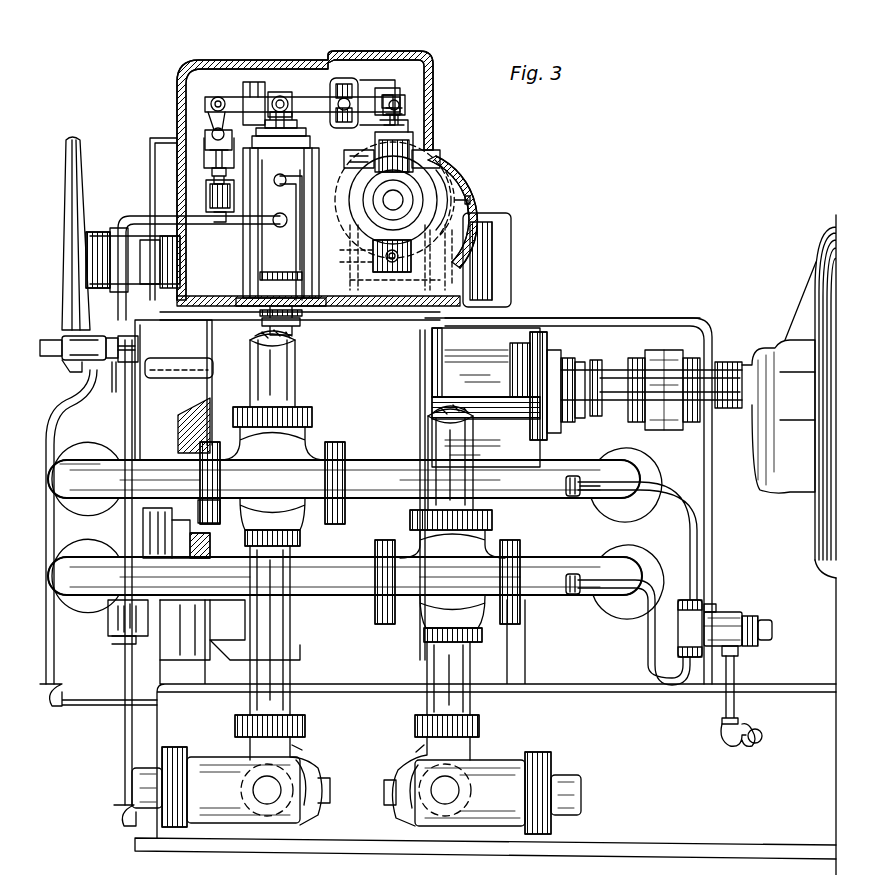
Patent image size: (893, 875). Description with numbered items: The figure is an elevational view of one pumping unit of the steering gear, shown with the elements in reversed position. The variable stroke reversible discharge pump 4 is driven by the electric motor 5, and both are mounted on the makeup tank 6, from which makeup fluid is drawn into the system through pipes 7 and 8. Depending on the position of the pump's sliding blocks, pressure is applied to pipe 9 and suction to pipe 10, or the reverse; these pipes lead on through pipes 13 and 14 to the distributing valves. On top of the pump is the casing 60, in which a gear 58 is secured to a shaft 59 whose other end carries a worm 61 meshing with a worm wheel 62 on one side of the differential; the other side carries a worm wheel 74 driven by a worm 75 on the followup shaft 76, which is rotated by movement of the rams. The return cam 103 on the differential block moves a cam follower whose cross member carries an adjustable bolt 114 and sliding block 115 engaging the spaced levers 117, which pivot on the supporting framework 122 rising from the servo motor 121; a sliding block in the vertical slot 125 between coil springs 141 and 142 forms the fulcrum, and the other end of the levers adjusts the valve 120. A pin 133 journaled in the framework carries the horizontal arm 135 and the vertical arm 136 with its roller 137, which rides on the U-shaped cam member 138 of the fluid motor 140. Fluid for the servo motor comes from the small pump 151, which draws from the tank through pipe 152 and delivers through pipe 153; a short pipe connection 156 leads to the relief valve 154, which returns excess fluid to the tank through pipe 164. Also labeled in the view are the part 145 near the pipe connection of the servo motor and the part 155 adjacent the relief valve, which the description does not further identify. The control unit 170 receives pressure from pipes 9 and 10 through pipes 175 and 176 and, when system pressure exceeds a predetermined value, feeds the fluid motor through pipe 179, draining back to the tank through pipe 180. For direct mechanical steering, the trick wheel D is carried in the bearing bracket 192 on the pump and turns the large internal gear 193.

The variable stroke reversible discharge pump 4 is at (536, 489).
The electric motor 5 is at (815, 272).
The makeup tank 6 is at (485, 804).
The pipe 7 is at (470, 702).
The pipe 8 is at (290, 698).
The pipe 9 is at (356, 581).
The pipe 10 is at (355, 483).
The pipe 13 is at (476, 485).
The pipe 14 is at (295, 398).
The gear 58 is at (496, 230).
The shaft 59 is at (368, 275).
The casing 60 is at (440, 150).
The worm 61 is at (400, 290).
The worm wheel 62 is at (472, 205).
The worm wheel 74 is at (418, 180).
The worm 75 is at (405, 132).
The followup shaft 76 is at (405, 165).
The return cam 103 is at (445, 192).
The adjustable bolt 114 is at (426, 125).
The sliding block 115 is at (428, 80).
The spaced levers 117 is at (372, 80).
The valve 120 is at (280, 92).
The servo motor 121 is at (281, 209).
The supporting framework 122 is at (308, 97).
The vertical slot 125 is at (385, 88).
The pin 133 is at (218, 97).
The horizontal arm 135 is at (255, 82).
The vertical arm 136 is at (212, 126).
The roller 137 is at (212, 140).
The U-shaped cam member 138 is at (212, 172).
The fluid motor 140 is at (206, 185).
The coil spring 141 is at (348, 78).
The coil spring 142 is at (403, 98).
The valve seat 145 is at (276, 340).
The small pump 151 is at (140, 644).
The pipe 152 is at (124, 738).
The pipe 153 is at (133, 420).
The relief valve 154 is at (75, 362).
The valve 155 is at (135, 344).
The short pipe connection 156 is at (110, 368).
The pipe 164 is at (56, 444).
The control unit 170 is at (728, 605).
The pipe 175 is at (650, 650).
The pipe 176 is at (670, 488).
The pipe 179 is at (714, 520).
The pipe 180 is at (740, 708).
The bearing bracket 192 is at (132, 213).
The internal gear 193 is at (170, 140).
The trick wheel D is at (78, 160).